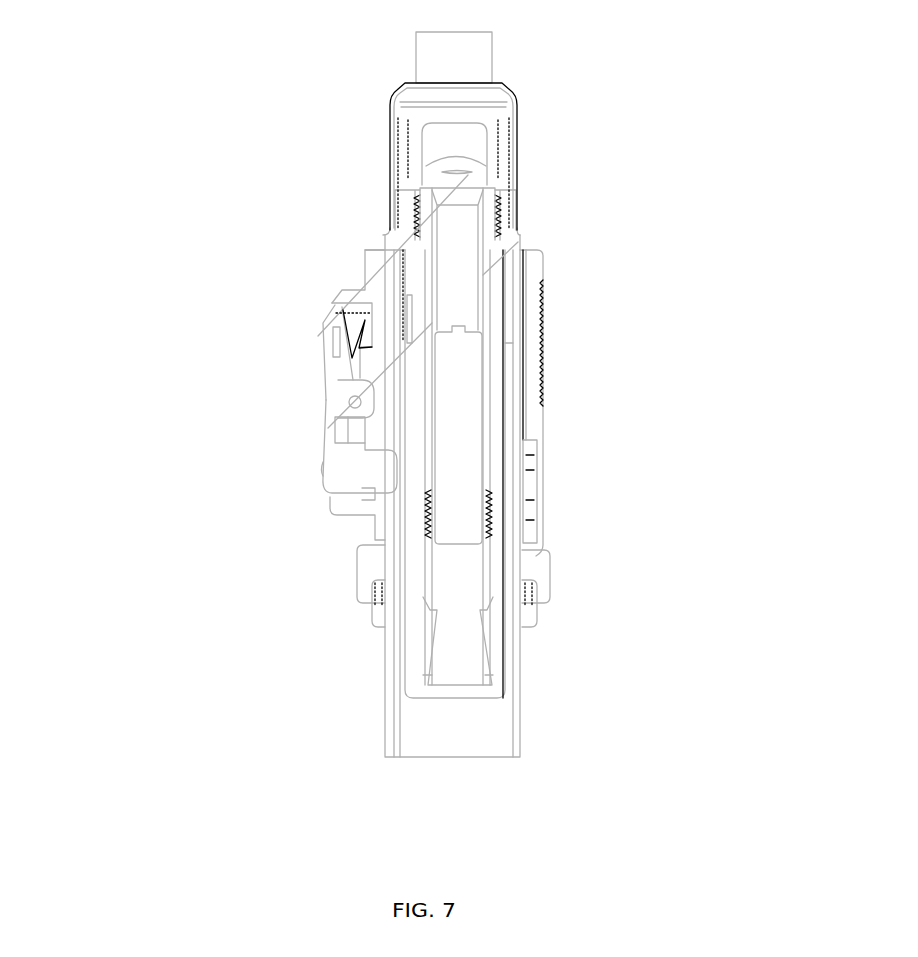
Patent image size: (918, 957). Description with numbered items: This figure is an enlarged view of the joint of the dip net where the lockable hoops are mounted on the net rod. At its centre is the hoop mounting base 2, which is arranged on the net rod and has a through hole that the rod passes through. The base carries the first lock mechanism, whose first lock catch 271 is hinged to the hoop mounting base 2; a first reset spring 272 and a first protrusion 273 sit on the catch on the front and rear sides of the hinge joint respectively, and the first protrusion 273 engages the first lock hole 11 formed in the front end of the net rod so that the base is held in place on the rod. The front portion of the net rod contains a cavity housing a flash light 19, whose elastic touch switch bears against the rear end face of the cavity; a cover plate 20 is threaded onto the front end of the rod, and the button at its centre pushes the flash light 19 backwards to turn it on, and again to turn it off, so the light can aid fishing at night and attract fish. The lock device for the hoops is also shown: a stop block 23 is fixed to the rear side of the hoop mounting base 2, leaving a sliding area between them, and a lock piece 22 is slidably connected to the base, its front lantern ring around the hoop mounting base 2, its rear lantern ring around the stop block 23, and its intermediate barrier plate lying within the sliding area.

The hoop mounting base 2 is at (532, 318).
The first lock hole 11 is at (395, 482).
The flash light 19 is at (452, 396).
The cover plate 20 is at (510, 187).
The lock piece 22 is at (538, 481).
The stop block 23 is at (527, 598).
The first lock catch 271 is at (335, 403).
The first reset spring 272 is at (360, 334).
The first protrusion 273 is at (386, 465).